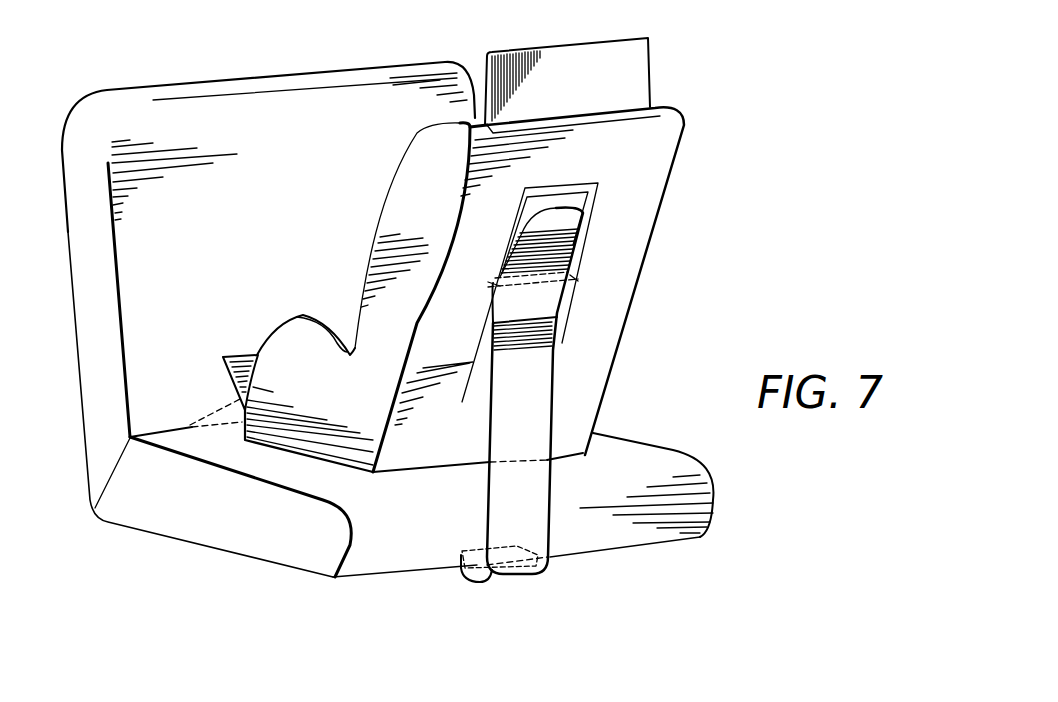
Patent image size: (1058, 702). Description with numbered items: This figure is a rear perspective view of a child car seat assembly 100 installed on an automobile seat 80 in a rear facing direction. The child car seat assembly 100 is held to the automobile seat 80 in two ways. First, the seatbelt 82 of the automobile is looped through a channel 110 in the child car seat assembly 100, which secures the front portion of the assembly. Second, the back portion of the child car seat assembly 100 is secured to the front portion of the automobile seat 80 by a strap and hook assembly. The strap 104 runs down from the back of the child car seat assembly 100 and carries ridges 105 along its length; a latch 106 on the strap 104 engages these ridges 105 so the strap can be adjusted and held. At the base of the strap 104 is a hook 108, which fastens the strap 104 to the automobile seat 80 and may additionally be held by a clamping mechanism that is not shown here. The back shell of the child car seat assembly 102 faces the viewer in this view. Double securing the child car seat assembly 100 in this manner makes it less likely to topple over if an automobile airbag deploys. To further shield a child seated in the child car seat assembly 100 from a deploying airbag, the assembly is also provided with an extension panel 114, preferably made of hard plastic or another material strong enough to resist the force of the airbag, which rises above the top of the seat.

The automobile seat 80 is at (400, 68).
The seatbelt 82 is at (217, 427).
The child car seat assembly 100 is at (658, 140).
The child seat back shell 102 is at (637, 213).
The strap 104 is at (532, 408).
The ridges 105 is at (545, 338).
The latch 106 is at (553, 297).
The hook 108 is at (520, 577).
The channel 110 is at (257, 353).
The extension panel 114 is at (650, 63).